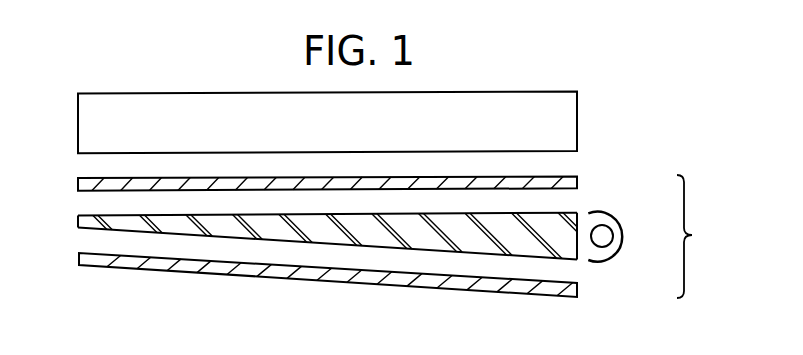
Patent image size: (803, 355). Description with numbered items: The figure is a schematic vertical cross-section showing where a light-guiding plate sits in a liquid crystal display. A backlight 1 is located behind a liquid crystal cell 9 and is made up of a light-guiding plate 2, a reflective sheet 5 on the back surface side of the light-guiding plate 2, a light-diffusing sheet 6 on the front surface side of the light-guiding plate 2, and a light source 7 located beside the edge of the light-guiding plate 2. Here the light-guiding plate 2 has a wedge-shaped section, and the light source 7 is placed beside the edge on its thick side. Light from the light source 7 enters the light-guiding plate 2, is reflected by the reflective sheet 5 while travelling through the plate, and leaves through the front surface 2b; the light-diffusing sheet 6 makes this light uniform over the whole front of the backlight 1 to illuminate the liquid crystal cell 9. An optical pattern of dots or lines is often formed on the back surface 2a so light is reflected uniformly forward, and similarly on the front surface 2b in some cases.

The backlight 1 is at (695, 236).
The light-guiding plate 2 is at (319, 218).
The back surface of the light-guiding plate 2a is at (133, 233).
The front surface of the light-guiding plate 2b is at (102, 213).
The reflective sheet 5 is at (105, 266).
The light-diffusing sheet 6 is at (103, 179).
The light source 7 is at (601, 235).
The liquid crystal cell 9 is at (542, 127).